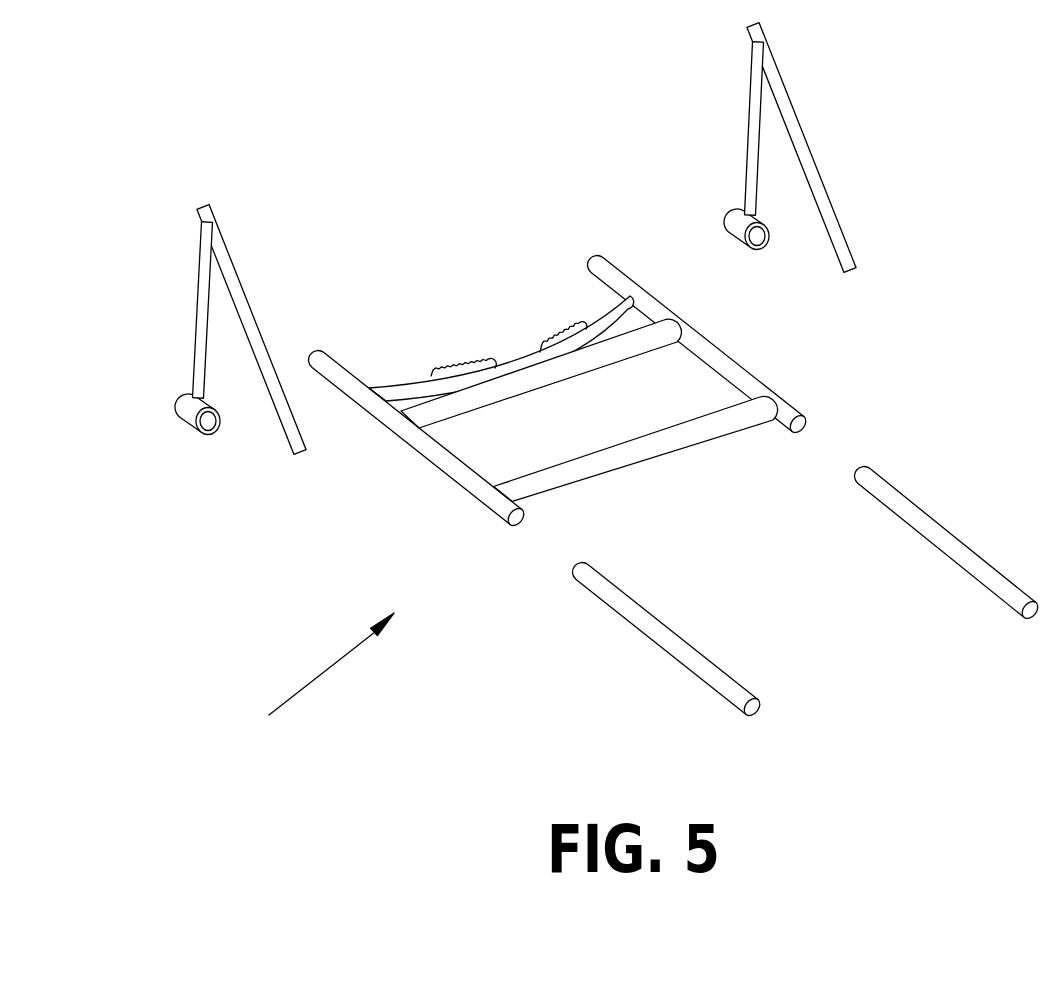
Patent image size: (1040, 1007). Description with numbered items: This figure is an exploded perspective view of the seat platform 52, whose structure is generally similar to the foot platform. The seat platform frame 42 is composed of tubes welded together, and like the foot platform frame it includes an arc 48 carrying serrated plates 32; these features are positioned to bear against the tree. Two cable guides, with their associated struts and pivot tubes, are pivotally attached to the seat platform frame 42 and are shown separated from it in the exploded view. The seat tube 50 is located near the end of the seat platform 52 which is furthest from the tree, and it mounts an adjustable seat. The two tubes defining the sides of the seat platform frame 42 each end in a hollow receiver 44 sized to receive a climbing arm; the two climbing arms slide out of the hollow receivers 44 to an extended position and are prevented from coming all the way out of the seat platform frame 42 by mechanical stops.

The serrated plate 32 is at (468, 367).
The seat platform frame 42 is at (733, 378).
The hollow receiver 44 is at (799, 427).
The arc 48 is at (402, 393).
The seat tube 50 is at (673, 440).
The seat platform 52 is at (315, 670).